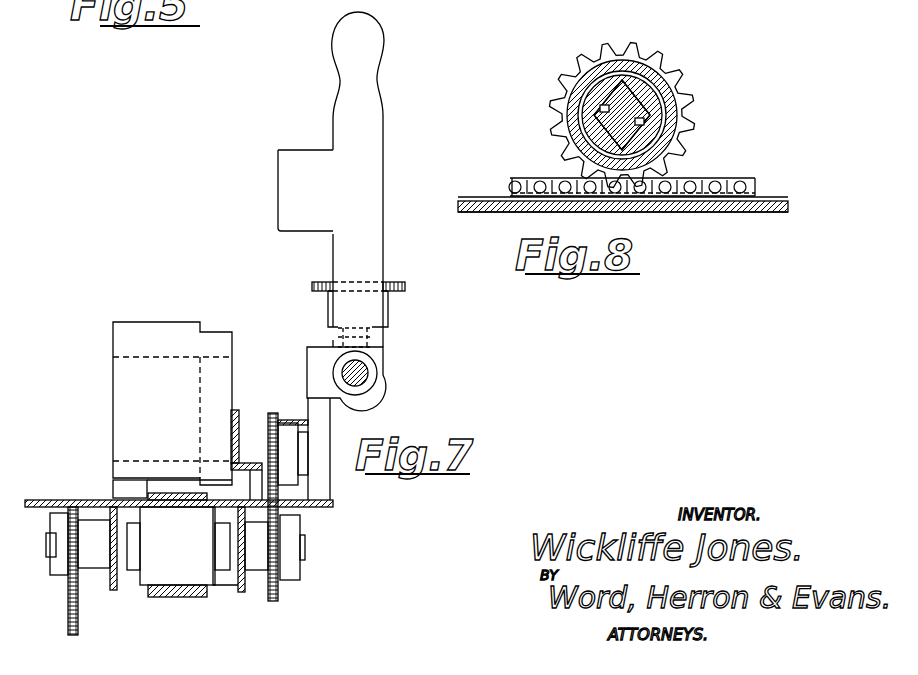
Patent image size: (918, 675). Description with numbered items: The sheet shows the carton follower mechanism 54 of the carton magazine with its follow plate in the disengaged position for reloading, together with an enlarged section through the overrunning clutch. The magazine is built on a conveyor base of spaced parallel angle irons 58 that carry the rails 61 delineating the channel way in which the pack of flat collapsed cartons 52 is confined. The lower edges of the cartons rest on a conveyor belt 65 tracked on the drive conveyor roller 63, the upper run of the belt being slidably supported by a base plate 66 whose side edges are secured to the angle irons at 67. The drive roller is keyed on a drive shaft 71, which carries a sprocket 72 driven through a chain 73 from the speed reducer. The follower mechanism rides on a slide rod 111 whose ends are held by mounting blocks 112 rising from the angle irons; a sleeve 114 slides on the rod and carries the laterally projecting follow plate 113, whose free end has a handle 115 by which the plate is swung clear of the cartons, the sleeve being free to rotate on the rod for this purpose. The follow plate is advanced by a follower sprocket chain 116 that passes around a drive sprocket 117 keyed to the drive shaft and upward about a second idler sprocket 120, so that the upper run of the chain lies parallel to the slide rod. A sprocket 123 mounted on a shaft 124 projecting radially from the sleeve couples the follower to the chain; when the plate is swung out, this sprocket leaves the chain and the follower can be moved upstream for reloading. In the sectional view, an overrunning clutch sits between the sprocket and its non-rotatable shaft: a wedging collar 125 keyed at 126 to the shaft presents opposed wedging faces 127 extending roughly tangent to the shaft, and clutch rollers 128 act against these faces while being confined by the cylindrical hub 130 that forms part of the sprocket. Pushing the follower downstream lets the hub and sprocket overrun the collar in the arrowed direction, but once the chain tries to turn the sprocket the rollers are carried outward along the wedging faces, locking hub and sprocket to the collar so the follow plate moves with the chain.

In FIG. 7, the pack of cartons 52 is at (172, 336).
In FIG. 7, the follower mechanism 54 is at (356, 188).
In FIG. 7, the angle irons 58 is at (333, 508).
In FIG. 7, the rails 61 is at (238, 414).
In FIG. 7, the drive conveyor roller 63 is at (155, 578).
In FIG. 7, the conveyor belt 65 is at (182, 598).
In FIG. 7, the base plate 66 is at (169, 505).
In FIG. 7, the securing points of base plate 67 is at (128, 524).
In FIG. 7, the drive shaft 71 is at (236, 556).
In FIG. 7, the sprocket 72 is at (63, 569).
In FIG. 7, the chain 73 is at (68, 618).
In FIG. 7, the slide rod 111 is at (362, 373).
In FIG. 7, the mounting blocks 112 is at (322, 482).
In FIG. 7, the follow plate 113 is at (280, 165).
In FIG. 7, the sleeve 114 is at (384, 352).
In FIG. 7, the handle 115 is at (365, 34).
In FIG. 7, the follower sprocket chain 116 is at (273, 411).
In FIG. 8, the follower sprocket chain 116 is at (762, 178).
In FIG. 7, the drive sprocket 117 is at (286, 570).
In FIG. 7, the second idler sprocket 120 is at (290, 450).
In FIG. 7, the sprocket 123 is at (400, 286).
In FIG. 8, the sprocket 123 is at (660, 40).
In FIG. 7, the shaft 124 is at (340, 329).
In FIG. 8, the shaft 124 is at (757, 166).
In FIG. 8, the wedging collar 125 is at (586, 114).
In FIG. 8, the key 126 is at (661, 72).
In FIG. 8, the wedging faces 127 is at (575, 135).
In FIG. 8, the clutch rollers 128 is at (592, 124).
In FIG. 7, the cylindrical hub 130 is at (388, 310).
In FIG. 8, the cylindrical hub 130 is at (570, 89).